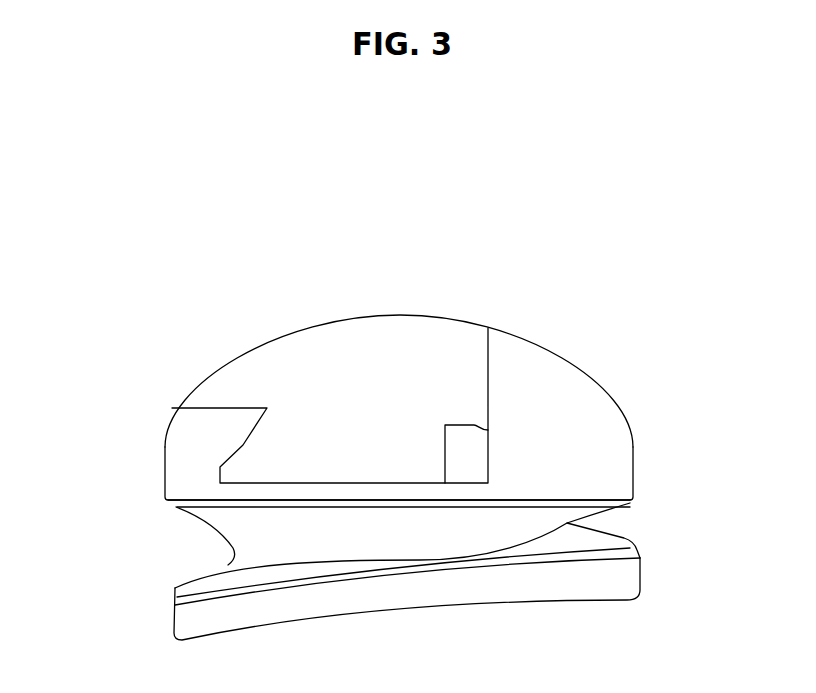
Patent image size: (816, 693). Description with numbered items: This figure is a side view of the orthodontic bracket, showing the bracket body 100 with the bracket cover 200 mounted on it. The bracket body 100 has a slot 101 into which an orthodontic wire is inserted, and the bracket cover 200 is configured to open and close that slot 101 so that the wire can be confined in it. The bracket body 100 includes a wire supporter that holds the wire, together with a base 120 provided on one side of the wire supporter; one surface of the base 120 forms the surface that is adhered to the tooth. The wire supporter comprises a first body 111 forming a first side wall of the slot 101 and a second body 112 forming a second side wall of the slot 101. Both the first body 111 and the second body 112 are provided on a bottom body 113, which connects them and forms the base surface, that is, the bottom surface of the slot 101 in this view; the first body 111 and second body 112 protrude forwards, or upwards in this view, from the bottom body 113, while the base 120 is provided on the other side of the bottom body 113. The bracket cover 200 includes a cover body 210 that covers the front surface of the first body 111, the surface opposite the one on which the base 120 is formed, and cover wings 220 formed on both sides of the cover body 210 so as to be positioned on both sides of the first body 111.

The bracket body 100 is at (364, 492).
The slot 101 is at (477, 450).
The first body 111 is at (183, 474).
The second body 112 is at (580, 393).
The bottom body 113 is at (247, 503).
The base 120 is at (458, 597).
The bracket cover 200 is at (406, 373).
The cover body 210 is at (372, 337).
The cover wings 220 is at (307, 448).